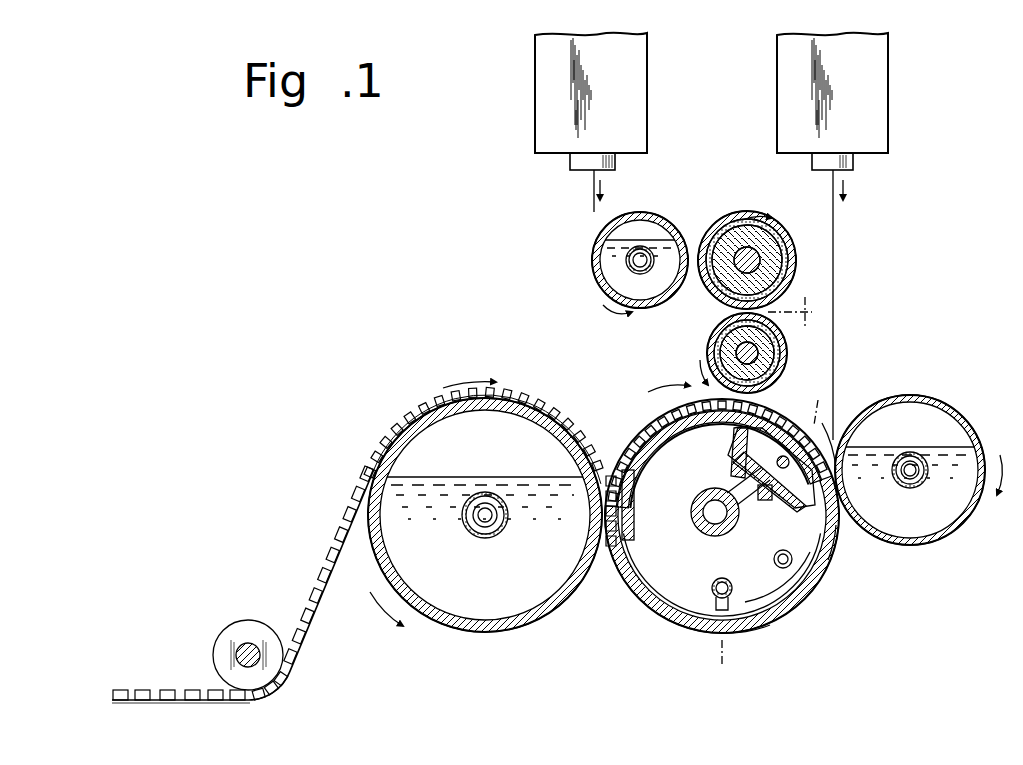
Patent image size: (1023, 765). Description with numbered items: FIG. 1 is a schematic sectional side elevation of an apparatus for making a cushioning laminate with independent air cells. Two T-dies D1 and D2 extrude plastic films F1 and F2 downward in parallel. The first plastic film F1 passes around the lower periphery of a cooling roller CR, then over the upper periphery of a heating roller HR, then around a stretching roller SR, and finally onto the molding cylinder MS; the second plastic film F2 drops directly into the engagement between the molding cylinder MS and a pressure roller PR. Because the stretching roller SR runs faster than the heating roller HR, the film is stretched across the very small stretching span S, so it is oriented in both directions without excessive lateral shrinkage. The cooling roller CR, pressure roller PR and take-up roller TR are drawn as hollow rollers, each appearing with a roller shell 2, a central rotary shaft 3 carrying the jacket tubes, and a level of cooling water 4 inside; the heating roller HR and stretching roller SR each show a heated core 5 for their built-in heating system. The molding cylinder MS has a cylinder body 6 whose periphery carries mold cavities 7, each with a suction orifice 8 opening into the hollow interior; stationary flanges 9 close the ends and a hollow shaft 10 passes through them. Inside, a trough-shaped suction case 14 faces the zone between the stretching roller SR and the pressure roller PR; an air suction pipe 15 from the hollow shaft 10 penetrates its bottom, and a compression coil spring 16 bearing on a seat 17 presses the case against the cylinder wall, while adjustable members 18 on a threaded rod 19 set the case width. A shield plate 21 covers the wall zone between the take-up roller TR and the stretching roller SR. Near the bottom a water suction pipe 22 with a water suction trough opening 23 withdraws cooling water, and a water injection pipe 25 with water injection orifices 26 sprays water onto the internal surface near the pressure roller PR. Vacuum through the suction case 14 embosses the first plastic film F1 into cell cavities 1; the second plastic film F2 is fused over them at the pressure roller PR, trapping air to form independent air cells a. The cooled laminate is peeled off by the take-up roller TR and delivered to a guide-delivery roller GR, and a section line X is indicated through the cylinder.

The independent concave cells 1 is at (520, 395).
The roll shell 2 is at (672, 222).
The roll shaft 3 is at (638, 245).
The liquid 4 is at (666, 296).
The roller core 5 is at (780, 248).
The cylinder body 6 is at (790, 612).
The mold cavities 7 is at (625, 450).
The suction orifice 8 is at (634, 531).
The stationary flange 9 is at (665, 600).
The hollow shaft 10 is at (720, 540).
The suction case 14 is at (826, 548).
The air suction pipe 15 is at (738, 458).
The compression coil spring 16 is at (722, 484).
The seat 17 is at (752, 505).
The adjustable members 18 is at (780, 448).
The threaded rod 19 is at (828, 410).
The shield plate 21 is at (655, 427).
The water suction pipe 22 is at (712, 596).
The water suction trough opening 23 is at (728, 606).
The water injection pipe 25 is at (795, 565).
The water injection orifices 26 is at (806, 588).
The independent air cells a is at (345, 520).
The cooling roller CR is at (645, 212).
The heating roller HR is at (706, 300).
The stretching roller SR is at (710, 360).
The take-up roller TR is at (475, 634).
The pressure roller PR is at (945, 416).
The guide-delivery roller GR is at (238, 618).
The molding cylinder MS is at (785, 641).
The first T-die D1 is at (648, 89).
The second T-die D2 is at (889, 89).
The first plastic film F1 is at (392, 437).
The second plastic film F2 is at (836, 243).
The stretching span S is at (797, 312).
The section line X is at (770, 534).